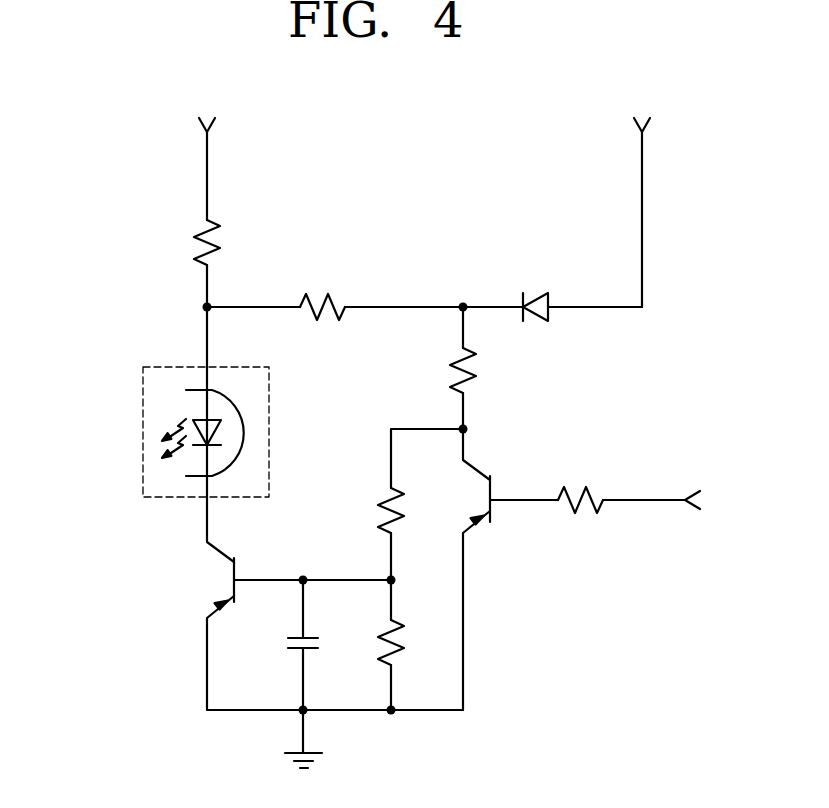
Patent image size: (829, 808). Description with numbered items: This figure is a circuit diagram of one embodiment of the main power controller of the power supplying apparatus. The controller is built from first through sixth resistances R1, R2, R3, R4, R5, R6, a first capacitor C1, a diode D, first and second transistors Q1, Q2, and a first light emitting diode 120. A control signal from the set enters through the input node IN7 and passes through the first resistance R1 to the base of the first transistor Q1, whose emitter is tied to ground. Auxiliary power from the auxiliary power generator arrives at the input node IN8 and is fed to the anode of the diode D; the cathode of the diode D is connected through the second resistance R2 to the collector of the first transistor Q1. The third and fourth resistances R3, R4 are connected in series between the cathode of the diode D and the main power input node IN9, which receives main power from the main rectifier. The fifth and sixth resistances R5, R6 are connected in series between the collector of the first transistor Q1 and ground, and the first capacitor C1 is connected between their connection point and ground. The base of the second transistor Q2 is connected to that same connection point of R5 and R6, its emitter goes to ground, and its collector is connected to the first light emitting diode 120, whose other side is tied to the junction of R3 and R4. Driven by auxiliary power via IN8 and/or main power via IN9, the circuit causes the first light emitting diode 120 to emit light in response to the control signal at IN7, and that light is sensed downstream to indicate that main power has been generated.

The first light emitting diode 120 is at (143, 431).
The first resistance R1 is at (621, 484).
The second resistance R2 is at (444, 368).
The third resistance R3 is at (365, 291).
The fourth resistance R4 is at (189, 293).
The fifth resistance R5 is at (405, 504).
The sixth resistance R6 is at (374, 645).
The first capacitor C1 is at (284, 645).
The diode D is at (582, 291).
The first transistor Q1 is at (494, 569).
The second transistor Q2 is at (282, 603).
The input node IN7 is at (715, 500).
The input node IN8 is at (643, 197).
The input node IN9 is at (206, 154).